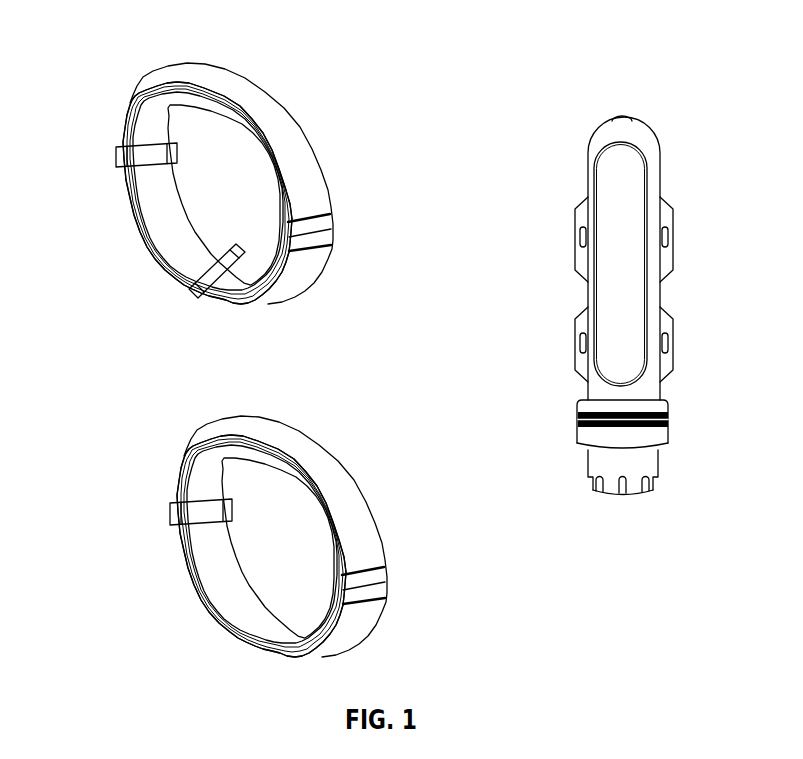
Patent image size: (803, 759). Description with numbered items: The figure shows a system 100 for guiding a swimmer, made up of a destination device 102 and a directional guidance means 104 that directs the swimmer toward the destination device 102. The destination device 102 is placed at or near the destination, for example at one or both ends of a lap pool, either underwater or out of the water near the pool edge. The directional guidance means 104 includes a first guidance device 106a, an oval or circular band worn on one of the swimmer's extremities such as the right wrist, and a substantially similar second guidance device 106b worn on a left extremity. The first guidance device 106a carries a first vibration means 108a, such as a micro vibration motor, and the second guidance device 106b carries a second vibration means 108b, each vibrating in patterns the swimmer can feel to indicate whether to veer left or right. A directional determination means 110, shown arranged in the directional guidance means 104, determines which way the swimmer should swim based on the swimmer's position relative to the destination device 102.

The system for guiding a swimmer 100 is at (147, 38).
The destination device 102 is at (643, 143).
The directional guidance means 104 is at (203, 393).
The first guidance device 106a is at (280, 100).
The second guidance device 106b is at (333, 460).
The first vibration means 108a is at (117, 156).
The second vibration means 108b is at (170, 513).
The directional determination means 110 is at (190, 296).